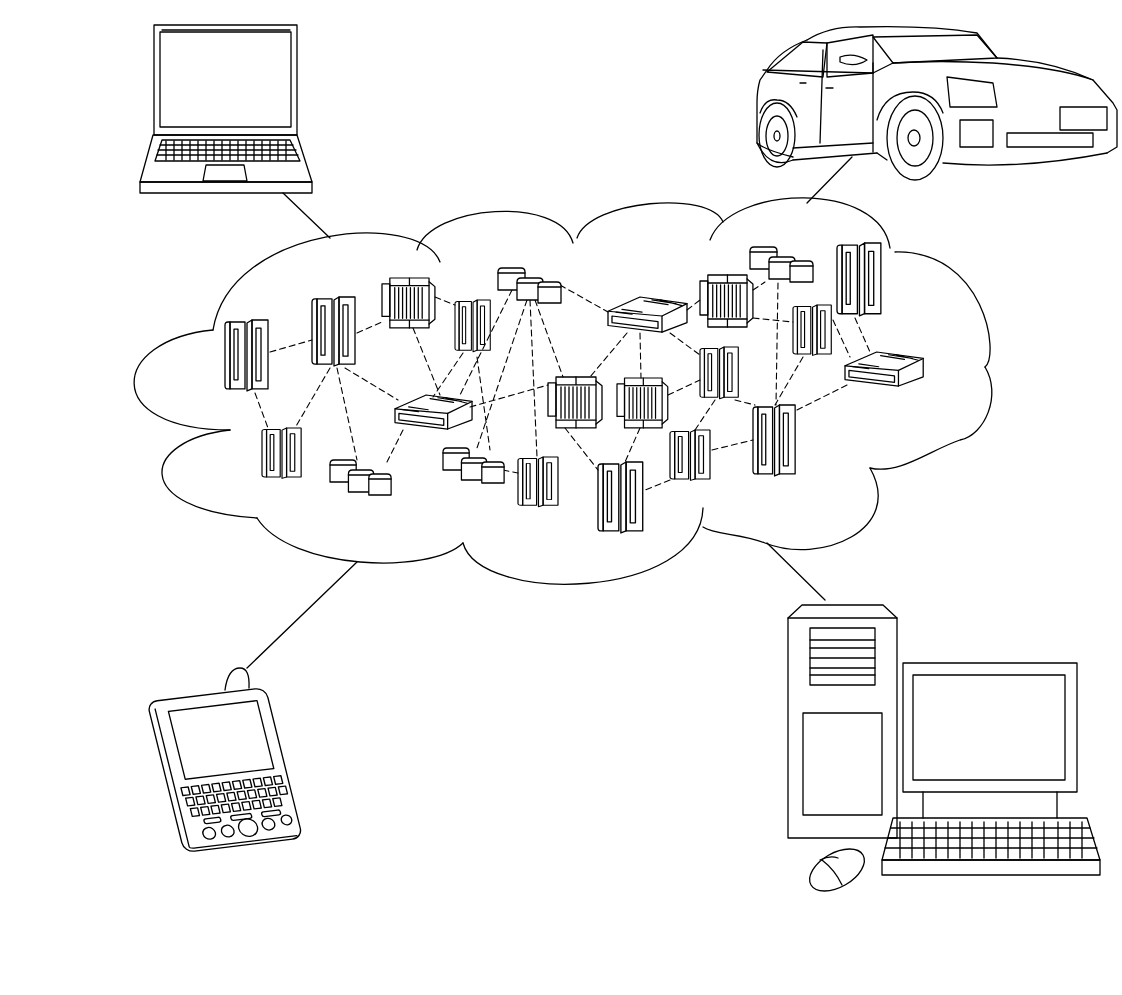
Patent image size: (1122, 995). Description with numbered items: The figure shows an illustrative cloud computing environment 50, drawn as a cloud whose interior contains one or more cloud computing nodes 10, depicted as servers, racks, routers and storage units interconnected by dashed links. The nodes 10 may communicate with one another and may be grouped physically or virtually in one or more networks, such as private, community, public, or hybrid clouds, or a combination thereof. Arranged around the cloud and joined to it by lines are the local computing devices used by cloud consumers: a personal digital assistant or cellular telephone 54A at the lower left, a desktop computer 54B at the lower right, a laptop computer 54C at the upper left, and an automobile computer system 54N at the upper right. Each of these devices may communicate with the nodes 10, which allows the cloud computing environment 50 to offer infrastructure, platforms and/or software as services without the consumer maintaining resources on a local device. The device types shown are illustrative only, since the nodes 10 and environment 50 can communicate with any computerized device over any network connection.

The cloud computing node 10 is at (925, 398).
The cloud computing environment 50 is at (990, 365).
The personal digital assistant (PDA) or cellular telephone 54A is at (287, 762).
The desktop computer 54B is at (987, 662).
The laptop computer 54C is at (297, 87).
The automobile computer system 54N is at (757, 103).